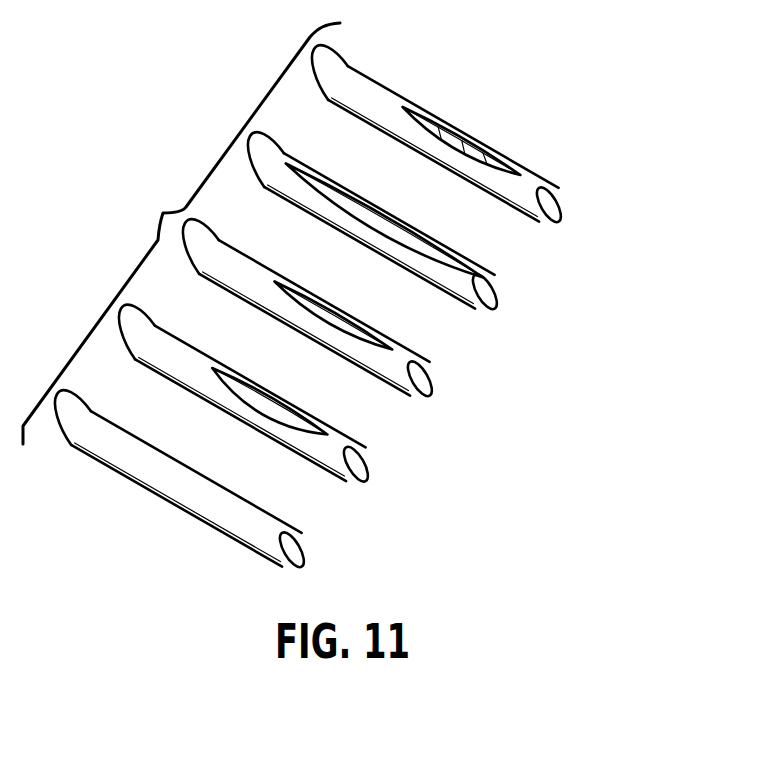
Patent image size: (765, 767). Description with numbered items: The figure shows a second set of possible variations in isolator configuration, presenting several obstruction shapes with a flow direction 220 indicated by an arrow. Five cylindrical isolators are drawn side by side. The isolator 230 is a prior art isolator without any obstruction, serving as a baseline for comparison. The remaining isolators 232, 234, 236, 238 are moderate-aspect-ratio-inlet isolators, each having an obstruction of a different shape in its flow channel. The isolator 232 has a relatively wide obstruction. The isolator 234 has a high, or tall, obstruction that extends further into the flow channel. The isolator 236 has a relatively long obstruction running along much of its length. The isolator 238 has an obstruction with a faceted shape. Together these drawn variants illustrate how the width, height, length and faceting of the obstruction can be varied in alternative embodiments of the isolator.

The flow direction 220 is at (508, 428).
The isolator 230 is at (292, 528).
The isolator 232 is at (368, 444).
The isolator 234 is at (425, 360).
The isolator 236 is at (502, 273).
The isolator 238 is at (563, 183).